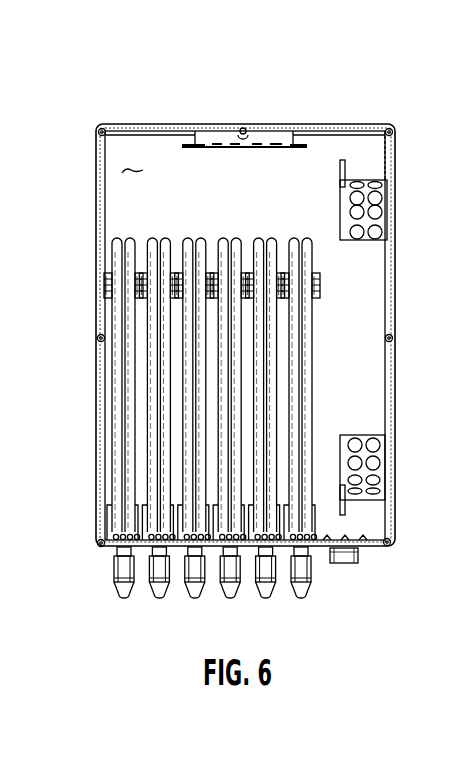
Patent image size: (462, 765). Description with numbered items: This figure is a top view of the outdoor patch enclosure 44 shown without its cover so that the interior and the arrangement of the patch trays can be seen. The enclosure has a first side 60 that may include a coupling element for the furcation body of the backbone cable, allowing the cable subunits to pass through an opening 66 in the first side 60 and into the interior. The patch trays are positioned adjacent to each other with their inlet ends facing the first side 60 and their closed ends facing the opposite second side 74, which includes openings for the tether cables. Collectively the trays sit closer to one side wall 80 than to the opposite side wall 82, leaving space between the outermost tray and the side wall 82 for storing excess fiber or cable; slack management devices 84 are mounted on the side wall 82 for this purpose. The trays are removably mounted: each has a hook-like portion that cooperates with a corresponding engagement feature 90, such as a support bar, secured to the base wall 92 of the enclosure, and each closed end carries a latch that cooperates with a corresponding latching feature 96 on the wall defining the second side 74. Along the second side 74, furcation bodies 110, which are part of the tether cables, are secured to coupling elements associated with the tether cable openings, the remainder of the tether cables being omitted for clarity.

The patch enclosure 44 is at (352, 98).
The first side 60 is at (163, 124).
The opening 66 is at (259, 124).
The base wall 92 is at (140, 167).
The side wall 80 is at (96, 200).
The opposite side wall 82 is at (383, 160).
The slack management devices 84 is at (378, 208).
The engagement feature 90 is at (320, 276).
The latching feature 96 is at (100, 547).
The furcation bodies 110 is at (308, 571).
The second side 74 is at (372, 551).